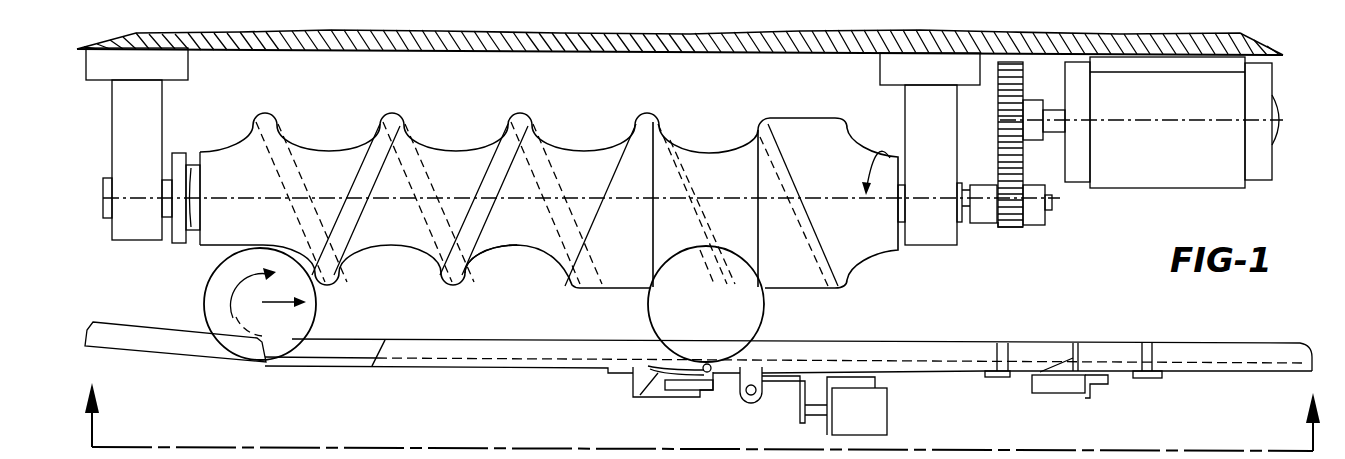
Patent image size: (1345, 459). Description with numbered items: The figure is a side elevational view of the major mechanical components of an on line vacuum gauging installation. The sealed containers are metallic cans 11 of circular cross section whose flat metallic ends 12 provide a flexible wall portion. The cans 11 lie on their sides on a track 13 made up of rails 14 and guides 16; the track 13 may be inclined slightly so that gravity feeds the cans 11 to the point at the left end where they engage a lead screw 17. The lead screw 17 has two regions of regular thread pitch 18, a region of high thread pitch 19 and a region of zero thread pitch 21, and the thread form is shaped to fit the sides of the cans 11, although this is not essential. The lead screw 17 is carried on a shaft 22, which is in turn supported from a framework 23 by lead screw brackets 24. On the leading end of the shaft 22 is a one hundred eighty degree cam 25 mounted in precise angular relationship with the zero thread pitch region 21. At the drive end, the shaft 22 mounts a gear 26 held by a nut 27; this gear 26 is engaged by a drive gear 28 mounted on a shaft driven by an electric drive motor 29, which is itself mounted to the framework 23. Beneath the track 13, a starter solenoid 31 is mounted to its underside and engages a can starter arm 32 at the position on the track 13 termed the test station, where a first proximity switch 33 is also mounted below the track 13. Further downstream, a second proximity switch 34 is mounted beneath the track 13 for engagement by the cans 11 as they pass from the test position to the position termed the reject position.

The metallic can 11 is at (318, 316).
The flat metallic end 12 is at (218, 288).
The track 13 is at (372, 374).
The rail 14 is at (271, 364).
The guide 16 is at (424, 357).
The lead screw 17 is at (672, 90).
The region of regular thread pitch 18 is at (332, 148).
The region of high thread pitch 19 is at (520, 252).
The region of zero thread pitch 21 is at (719, 133).
The shaft 22 is at (103, 198).
The framework 23 is at (450, 52).
The lead screw bracket 24 is at (112, 112).
The 180° cam 25 is at (181, 152).
The gear 26 is at (1003, 229).
The nut 27 is at (1035, 225).
The drive gear 28 is at (997, 140).
The electric drive motor 29 is at (1122, 178).
The starter solenoid 31 is at (884, 422).
The can starter arm 32 is at (638, 393).
The first proximity switch 33 is at (687, 387).
The second proximity switch 34 is at (1058, 386).